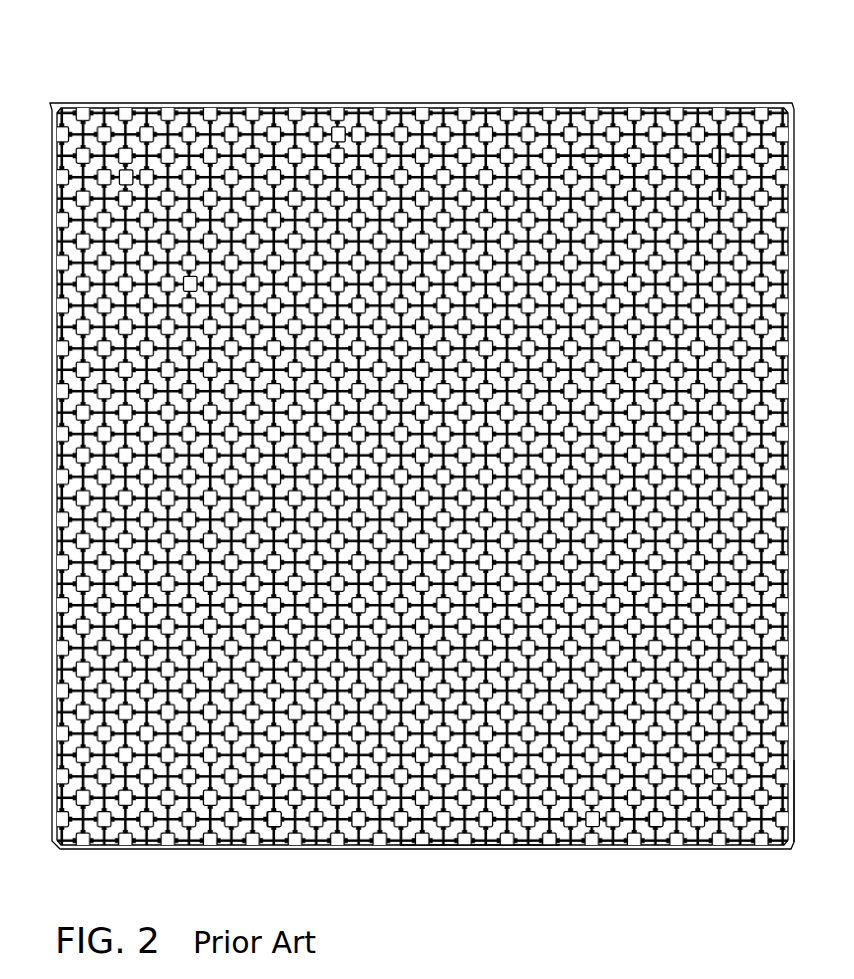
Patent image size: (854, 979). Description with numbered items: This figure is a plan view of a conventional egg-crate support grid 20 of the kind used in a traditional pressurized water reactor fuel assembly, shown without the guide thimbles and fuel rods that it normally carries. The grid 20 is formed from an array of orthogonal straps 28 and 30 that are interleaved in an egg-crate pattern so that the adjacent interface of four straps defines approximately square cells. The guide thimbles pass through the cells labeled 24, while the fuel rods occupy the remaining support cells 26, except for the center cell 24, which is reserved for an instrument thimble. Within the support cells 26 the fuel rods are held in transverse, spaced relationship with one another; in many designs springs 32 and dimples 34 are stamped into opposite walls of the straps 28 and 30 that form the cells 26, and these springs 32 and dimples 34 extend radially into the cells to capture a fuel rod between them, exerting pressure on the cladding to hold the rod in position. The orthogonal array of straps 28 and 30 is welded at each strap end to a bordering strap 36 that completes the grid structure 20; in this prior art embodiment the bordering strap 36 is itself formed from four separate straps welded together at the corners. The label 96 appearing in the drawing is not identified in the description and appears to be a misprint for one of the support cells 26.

The tray 20 is at (520, 70).
The pockets 24 is at (284, 229).
The posts 26 is at (132, 177).
The horizontal ribs 28 is at (578, 147).
The vertical ribs 30 is at (748, 197).
The bottom rail 32 is at (477, 827).
The connecting webs 34 is at (283, 817).
The side wall 36 is at (793, 802).
The post 96 is at (198, 273).